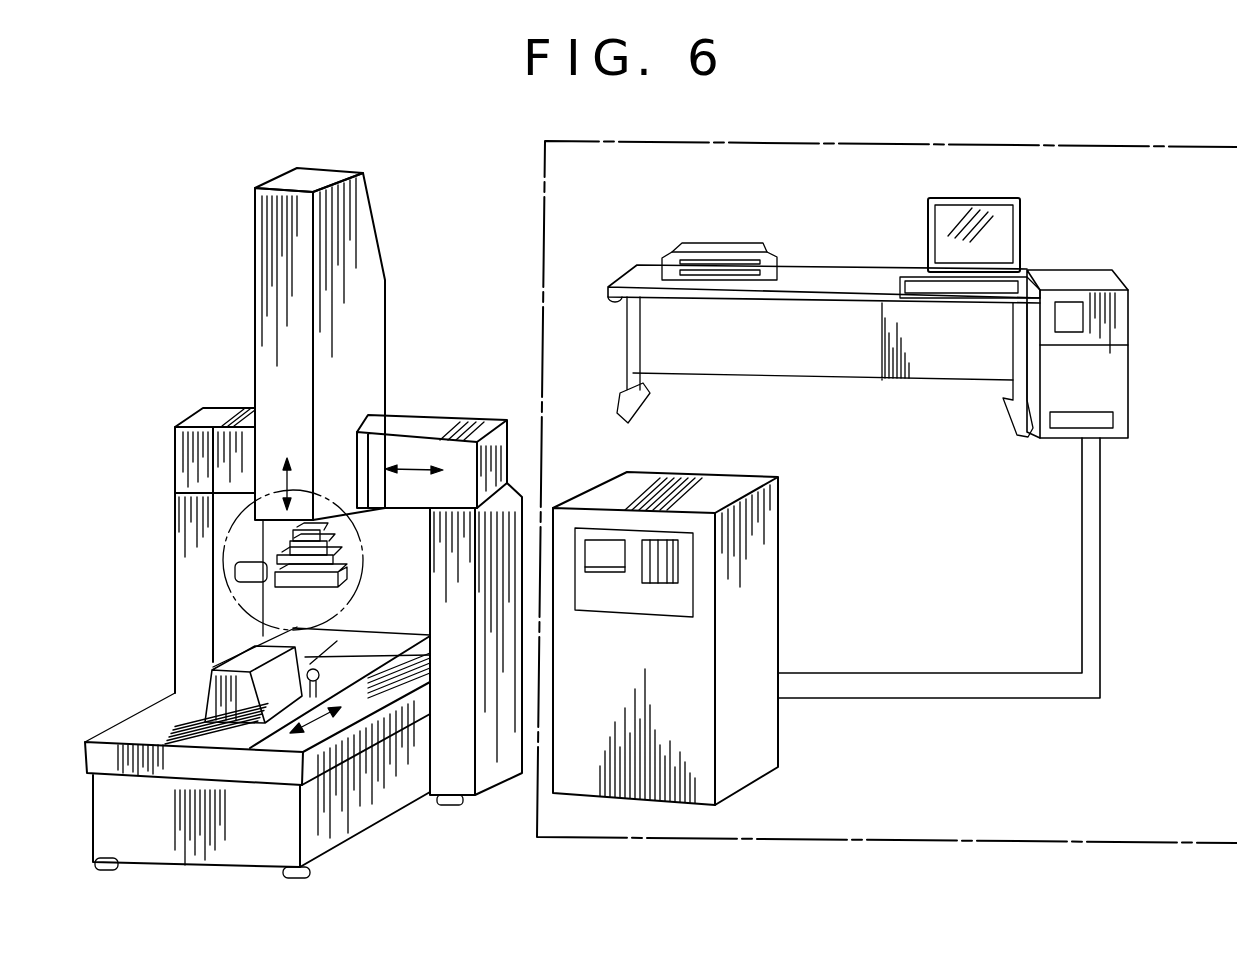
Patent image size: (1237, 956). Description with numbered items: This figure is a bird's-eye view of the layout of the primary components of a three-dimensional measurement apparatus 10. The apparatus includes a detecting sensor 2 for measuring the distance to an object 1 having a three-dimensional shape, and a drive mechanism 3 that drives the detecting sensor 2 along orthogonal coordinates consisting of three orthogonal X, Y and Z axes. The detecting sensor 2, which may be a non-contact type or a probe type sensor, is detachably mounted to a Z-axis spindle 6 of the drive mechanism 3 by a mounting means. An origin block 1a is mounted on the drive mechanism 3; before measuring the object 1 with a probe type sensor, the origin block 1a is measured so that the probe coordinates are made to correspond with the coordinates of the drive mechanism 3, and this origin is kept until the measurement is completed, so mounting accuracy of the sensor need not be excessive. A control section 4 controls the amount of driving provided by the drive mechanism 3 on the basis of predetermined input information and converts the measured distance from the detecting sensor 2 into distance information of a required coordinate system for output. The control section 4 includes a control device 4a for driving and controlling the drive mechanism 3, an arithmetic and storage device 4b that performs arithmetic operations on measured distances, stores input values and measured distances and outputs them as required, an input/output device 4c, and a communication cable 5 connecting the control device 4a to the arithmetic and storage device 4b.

The three-dimensional measurement apparatus 10 is at (252, 228).
The object 1 is at (210, 710).
The origin block 1a is at (320, 678).
The detecting sensor 2 is at (262, 548).
The drive mechanism 3 is at (198, 413).
The Z-axis spindle 6 is at (254, 310).
The control section 4 is at (1026, 843).
The control device 4a is at (770, 583).
The arithmetic and storage device 4b is at (1120, 380).
The input/output device 4c is at (930, 221).
The communication cable 5 is at (1113, 584).